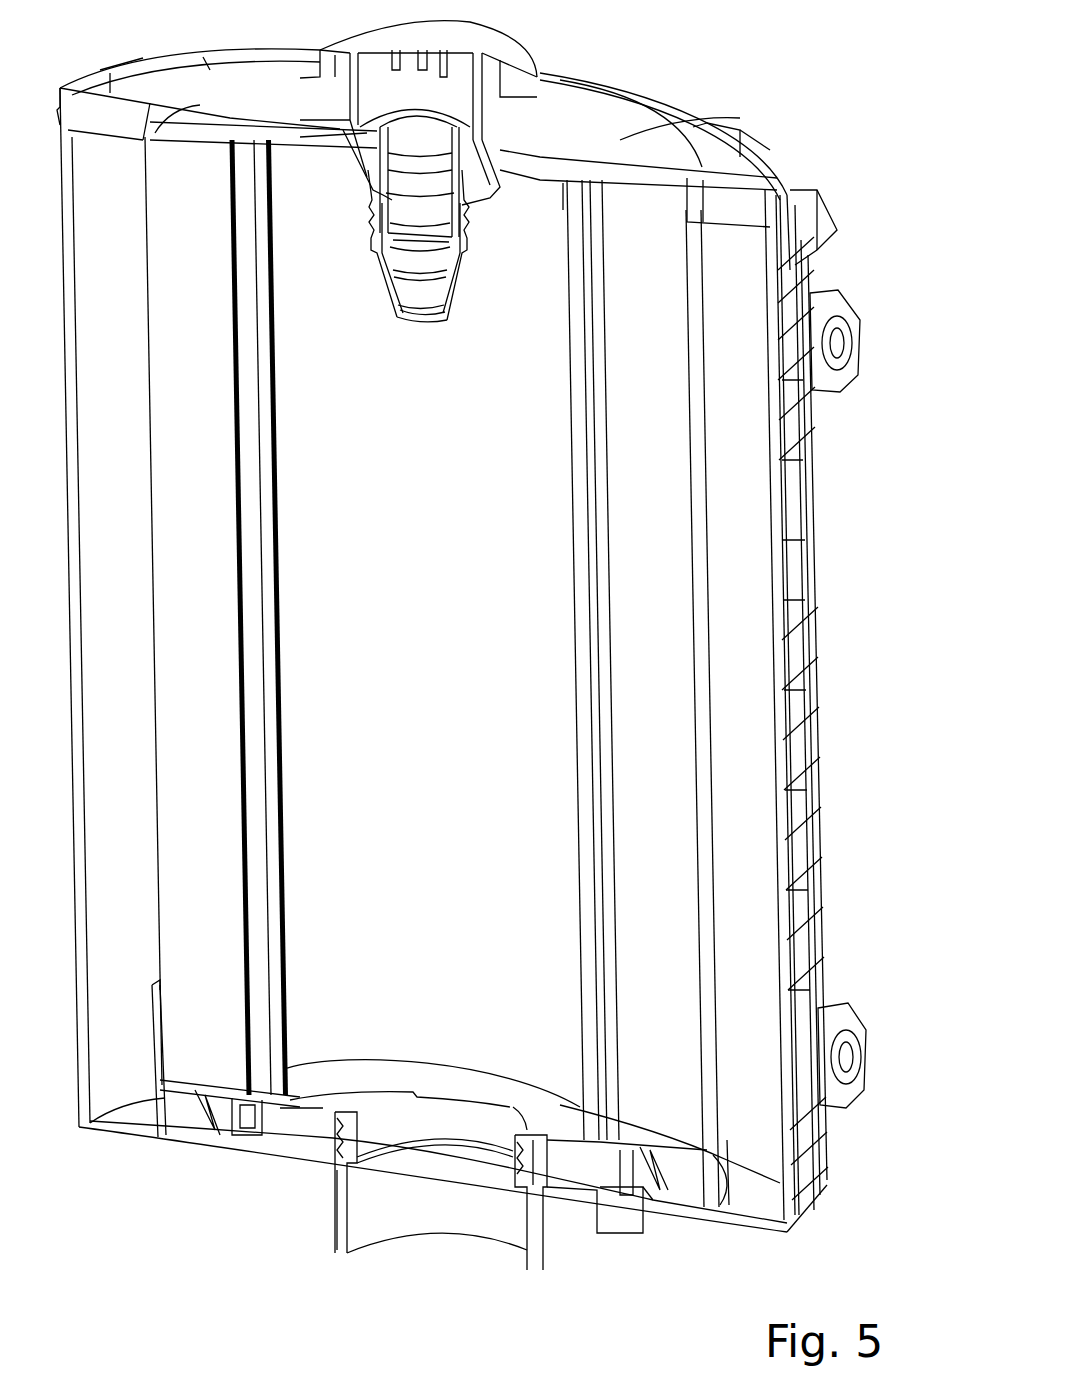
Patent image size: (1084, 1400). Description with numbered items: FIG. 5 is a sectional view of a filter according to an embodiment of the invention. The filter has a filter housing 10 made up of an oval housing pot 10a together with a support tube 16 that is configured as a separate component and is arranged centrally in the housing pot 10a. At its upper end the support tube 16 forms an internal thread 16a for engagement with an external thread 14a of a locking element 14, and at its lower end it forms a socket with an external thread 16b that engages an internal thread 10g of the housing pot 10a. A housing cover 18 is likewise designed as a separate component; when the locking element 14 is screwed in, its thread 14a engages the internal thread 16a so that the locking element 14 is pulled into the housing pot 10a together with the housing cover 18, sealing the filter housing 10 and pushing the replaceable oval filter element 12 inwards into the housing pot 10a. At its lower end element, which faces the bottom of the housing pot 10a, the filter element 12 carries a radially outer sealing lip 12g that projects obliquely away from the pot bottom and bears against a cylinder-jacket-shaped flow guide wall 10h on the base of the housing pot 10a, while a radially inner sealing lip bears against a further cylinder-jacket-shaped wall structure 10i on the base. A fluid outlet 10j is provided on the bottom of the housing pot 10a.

The filter housing 10 is at (818, 433).
The housing pot 10a is at (787, 627).
The internal thread 10g is at (333, 1163).
The flow guide wall 10h is at (718, 1207).
The wall structure 10i is at (200, 1087).
The fluid outlet 10j is at (443, 1197).
The filter element 12 is at (660, 497).
The radially outer sealing lip 12g is at (147, 1073).
The locking element 14 is at (573, 75).
The external thread 14a is at (360, 183).
The support tube 16 is at (585, 775).
The internal thread 16a is at (467, 242).
The external thread 16b is at (530, 1153).
The housing cover 18 is at (620, 140).